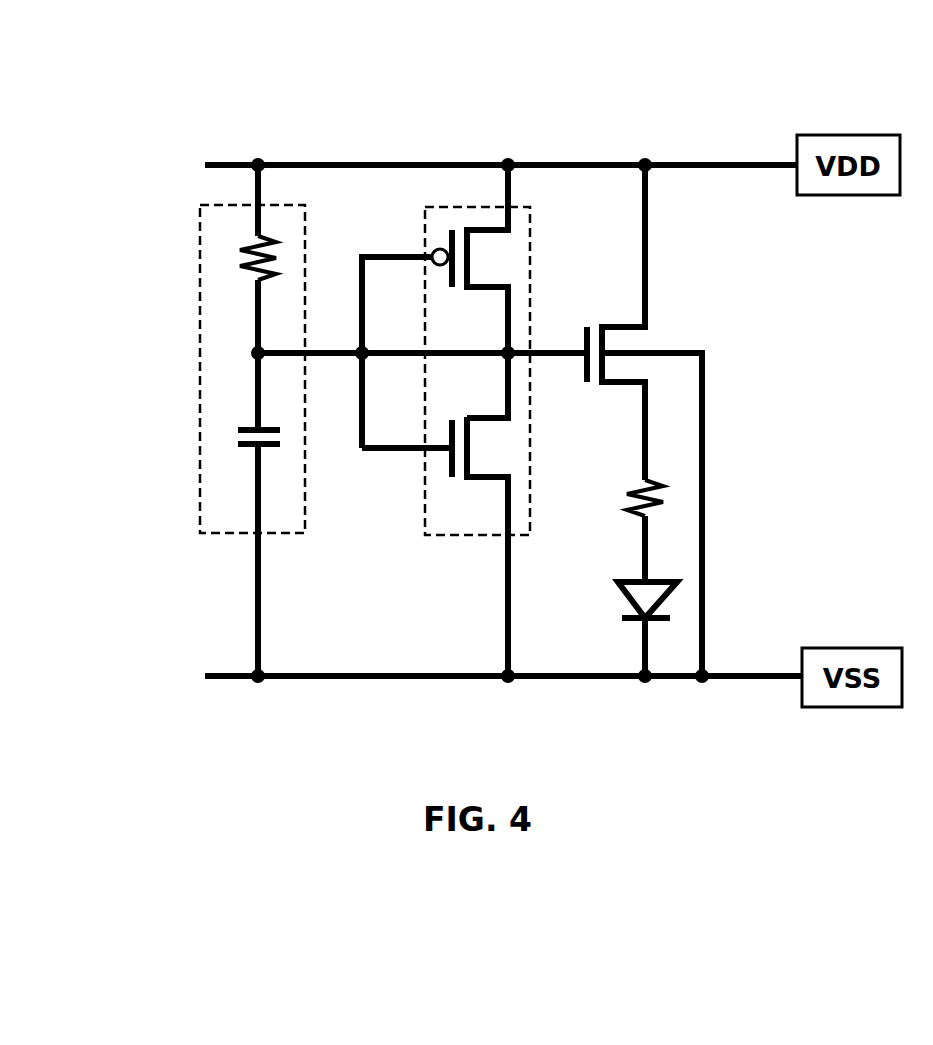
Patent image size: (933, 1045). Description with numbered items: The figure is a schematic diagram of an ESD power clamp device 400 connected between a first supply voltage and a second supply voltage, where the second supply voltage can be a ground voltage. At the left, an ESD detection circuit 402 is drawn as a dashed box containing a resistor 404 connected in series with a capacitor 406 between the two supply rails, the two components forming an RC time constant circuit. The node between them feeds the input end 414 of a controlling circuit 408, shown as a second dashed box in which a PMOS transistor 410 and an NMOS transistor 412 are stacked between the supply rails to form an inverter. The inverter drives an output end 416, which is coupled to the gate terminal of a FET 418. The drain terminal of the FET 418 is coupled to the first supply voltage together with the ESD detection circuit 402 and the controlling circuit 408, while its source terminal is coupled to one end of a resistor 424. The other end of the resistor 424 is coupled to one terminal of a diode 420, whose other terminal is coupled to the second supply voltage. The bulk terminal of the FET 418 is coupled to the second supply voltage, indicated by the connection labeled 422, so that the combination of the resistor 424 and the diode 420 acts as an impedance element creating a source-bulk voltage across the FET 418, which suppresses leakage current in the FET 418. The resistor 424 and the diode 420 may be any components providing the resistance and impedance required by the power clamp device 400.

The ESD power clamp device 400 is at (180, 98).
The ESD detection circuit 402 is at (195, 352).
The resistor 404 is at (226, 249).
The capacitor 406 is at (226, 436).
The controlling circuit 408 is at (422, 250).
The PMOS transistor 410 is at (495, 222).
The NMOS transistor 412 is at (460, 492).
The input end 414 is at (333, 346).
The output end 416 is at (557, 347).
The FET 418 is at (626, 322).
The diode 420 is at (615, 598).
The bulk terminal connection 422 is at (676, 348).
The resistor 424 is at (616, 496).